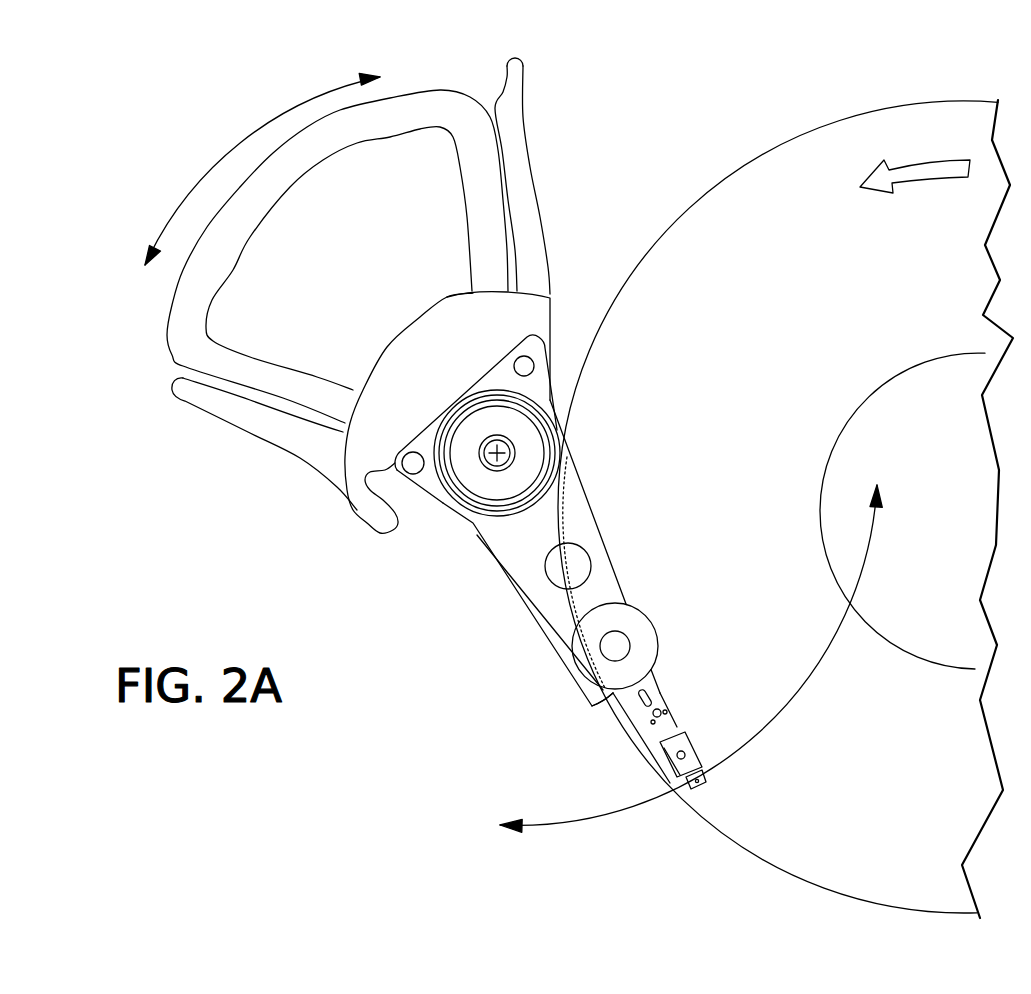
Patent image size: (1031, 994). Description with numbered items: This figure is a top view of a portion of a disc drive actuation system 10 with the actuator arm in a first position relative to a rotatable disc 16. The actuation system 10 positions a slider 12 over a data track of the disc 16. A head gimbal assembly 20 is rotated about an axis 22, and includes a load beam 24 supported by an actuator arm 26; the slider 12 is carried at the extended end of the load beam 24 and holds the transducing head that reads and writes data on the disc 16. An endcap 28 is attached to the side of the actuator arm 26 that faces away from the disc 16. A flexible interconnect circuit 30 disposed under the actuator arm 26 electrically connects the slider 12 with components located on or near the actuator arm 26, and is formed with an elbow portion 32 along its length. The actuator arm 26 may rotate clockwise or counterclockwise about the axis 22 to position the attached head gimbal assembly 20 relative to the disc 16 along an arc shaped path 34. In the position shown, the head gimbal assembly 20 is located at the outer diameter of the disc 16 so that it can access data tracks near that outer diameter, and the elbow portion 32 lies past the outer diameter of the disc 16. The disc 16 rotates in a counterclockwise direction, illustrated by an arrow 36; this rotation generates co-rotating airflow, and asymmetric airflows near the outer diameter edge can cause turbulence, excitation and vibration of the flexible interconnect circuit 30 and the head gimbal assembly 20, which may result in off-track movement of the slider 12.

The disc drive actuation system 10 is at (258, 472).
The slider 12 is at (704, 770).
The disc 16 is at (732, 255).
The head gimbal assembly 20 is at (725, 737).
The axis 22 is at (497, 453).
The load beam 24 is at (660, 703).
The actuator arm 26 is at (500, 535).
The endcap 28 is at (652, 653).
The flexible interconnect circuit 30 is at (527, 615).
The elbow portion 32 is at (594, 716).
The arc shaped path 34 is at (873, 527).
The arrow 36 is at (940, 178).